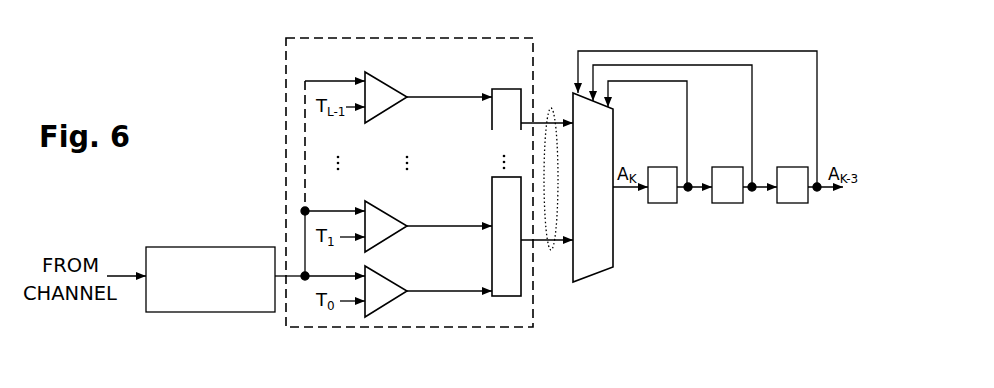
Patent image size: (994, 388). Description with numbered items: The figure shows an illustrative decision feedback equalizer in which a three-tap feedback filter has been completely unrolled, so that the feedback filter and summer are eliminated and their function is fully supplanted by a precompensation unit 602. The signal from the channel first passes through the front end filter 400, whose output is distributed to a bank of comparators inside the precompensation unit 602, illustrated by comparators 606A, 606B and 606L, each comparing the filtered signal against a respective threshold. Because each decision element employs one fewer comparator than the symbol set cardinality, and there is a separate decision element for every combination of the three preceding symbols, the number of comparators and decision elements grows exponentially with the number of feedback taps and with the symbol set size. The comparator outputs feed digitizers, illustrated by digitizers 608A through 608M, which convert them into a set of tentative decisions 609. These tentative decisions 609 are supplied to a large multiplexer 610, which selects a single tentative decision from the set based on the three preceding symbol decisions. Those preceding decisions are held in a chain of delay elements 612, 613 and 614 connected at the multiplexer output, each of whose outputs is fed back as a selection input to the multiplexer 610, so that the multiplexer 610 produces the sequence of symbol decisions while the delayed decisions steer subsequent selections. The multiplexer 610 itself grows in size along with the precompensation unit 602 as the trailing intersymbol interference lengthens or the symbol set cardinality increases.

The front end filter 400 is at (203, 313).
The precompensation unit 602 is at (330, 38).
The comparator 606L is at (397, 80).
The comparator 606B is at (395, 209).
The comparator 606A is at (395, 274).
The digitizer 608M is at (492, 89).
The digitizer 608A is at (492, 177).
The tentative decisions 609 is at (548, 250).
The multiplexer 610 is at (615, 116).
The delay element 612 is at (653, 203).
The delay element 613 is at (717, 203).
The delay element 614 is at (782, 203).